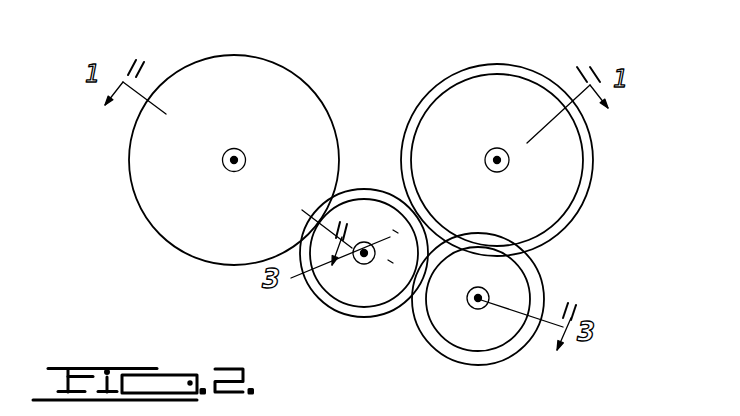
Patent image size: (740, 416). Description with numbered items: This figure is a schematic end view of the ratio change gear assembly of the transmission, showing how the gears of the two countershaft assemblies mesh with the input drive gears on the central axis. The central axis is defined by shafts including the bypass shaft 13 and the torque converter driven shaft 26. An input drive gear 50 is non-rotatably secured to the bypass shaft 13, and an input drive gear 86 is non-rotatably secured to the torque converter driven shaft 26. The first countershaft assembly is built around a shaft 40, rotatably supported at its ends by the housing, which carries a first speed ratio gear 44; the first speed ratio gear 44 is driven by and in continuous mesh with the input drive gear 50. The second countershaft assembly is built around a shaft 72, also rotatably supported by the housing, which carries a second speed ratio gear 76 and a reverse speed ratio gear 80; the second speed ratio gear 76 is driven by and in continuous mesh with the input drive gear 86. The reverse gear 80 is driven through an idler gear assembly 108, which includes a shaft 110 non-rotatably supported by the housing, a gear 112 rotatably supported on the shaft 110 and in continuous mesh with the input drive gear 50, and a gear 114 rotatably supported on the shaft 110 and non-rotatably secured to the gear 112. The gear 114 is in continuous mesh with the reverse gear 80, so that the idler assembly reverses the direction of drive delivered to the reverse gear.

The first speed ratio gear 44 is at (242, 55).
The shaft 40 is at (237, 150).
The second speed ratio gear 76 is at (500, 66).
The reverse speed ratio gear 80 is at (449, 90).
The shaft 72 is at (497, 150).
The input drive gear 86 is at (337, 313).
The input drive gear 50 is at (327, 295).
The torque converter driven shaft 26 is at (367, 245).
The bypass shaft 13 is at (362, 263).
The idler gear assembly 108 is at (522, 357).
The gear 112 is at (422, 335).
The gear 114 is at (448, 338).
The shaft 110 is at (478, 287).